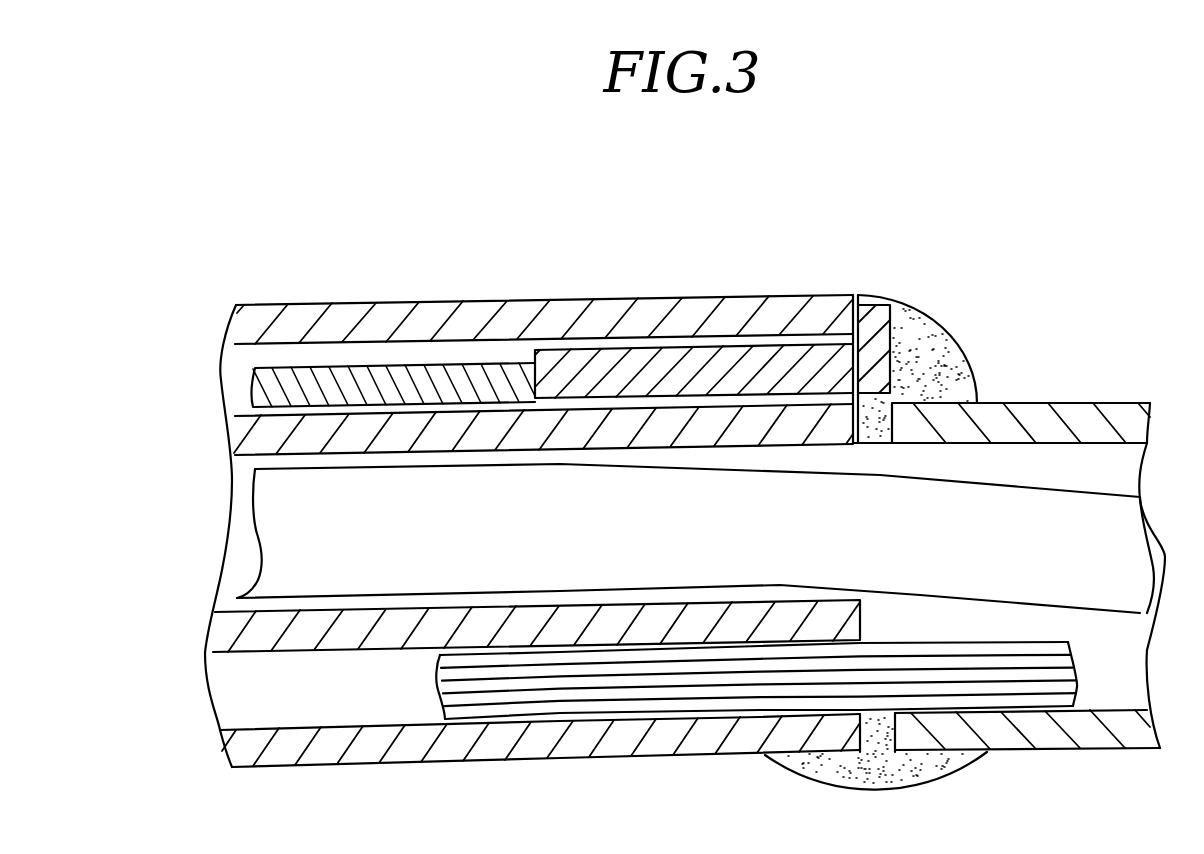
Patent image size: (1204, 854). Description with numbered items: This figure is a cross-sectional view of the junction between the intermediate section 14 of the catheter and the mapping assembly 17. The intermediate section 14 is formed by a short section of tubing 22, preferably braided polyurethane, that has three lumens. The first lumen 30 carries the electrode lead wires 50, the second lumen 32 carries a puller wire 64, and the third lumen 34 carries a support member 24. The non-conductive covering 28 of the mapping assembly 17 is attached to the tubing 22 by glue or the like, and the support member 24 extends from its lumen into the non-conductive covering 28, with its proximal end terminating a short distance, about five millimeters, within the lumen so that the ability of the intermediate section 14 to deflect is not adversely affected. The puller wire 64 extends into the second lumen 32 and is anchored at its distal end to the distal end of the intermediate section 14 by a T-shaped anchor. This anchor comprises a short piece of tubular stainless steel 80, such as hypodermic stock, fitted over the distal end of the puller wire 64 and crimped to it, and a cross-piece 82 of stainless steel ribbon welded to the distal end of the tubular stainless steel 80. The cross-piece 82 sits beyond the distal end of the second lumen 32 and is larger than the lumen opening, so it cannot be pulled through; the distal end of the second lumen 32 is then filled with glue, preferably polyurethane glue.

The intermediate section 14 is at (405, 231).
The mapping assembly 17 is at (1042, 315).
The tubing 22 is at (383, 320).
The support member 24 is at (972, 512).
The non-conductive covering 28 is at (1043, 738).
The first lumen 30 is at (458, 727).
The second lumen 32 is at (767, 342).
The third lumen 34 is at (278, 607).
The electrode lead wires 50 is at (617, 693).
The puller wire 64 is at (313, 380).
The tubular stainless steel 80 is at (658, 368).
The cross-piece 82 is at (871, 320).